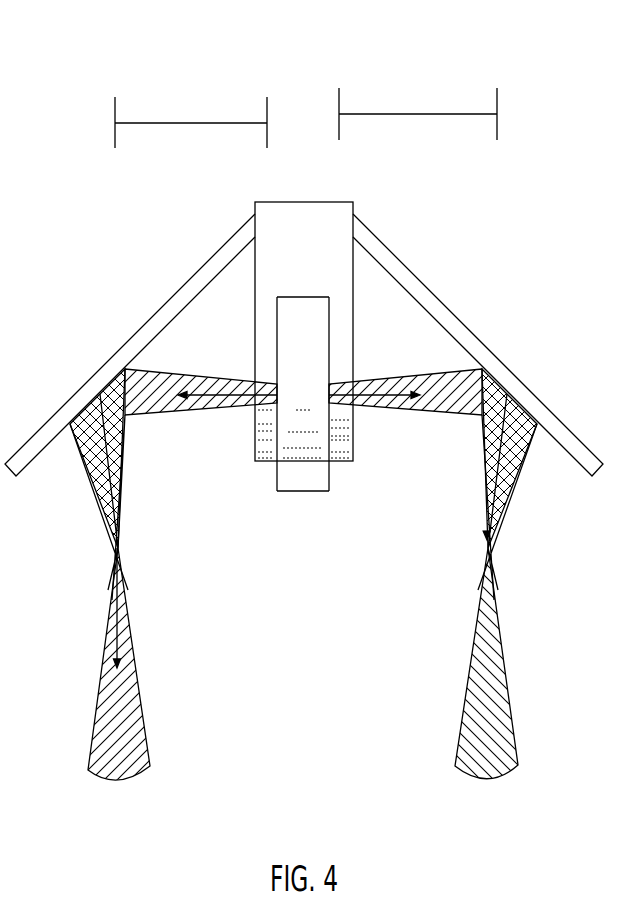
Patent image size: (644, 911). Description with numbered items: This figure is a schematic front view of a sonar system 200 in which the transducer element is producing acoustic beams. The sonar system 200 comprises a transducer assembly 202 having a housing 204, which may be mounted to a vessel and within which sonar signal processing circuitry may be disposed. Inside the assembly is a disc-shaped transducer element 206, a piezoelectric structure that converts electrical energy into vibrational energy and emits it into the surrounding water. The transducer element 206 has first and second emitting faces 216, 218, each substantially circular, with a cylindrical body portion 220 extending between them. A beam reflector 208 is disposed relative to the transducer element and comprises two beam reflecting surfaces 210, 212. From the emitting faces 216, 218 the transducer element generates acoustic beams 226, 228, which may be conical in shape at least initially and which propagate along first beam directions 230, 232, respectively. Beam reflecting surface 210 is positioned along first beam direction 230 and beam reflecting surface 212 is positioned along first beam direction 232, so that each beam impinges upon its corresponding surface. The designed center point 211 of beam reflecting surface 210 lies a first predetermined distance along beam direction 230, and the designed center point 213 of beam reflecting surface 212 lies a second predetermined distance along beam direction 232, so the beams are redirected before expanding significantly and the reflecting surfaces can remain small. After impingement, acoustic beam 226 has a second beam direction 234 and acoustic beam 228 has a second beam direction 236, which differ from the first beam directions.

The sonar system 200 is at (524, 56).
The transducer assembly 202 is at (424, 192).
The housing 204 is at (302, 202).
The transducer element 206 is at (283, 512).
The beam reflector 208 is at (48, 349).
The beam reflecting surface 210 is at (47, 453).
The designed center point 211 is at (120, 365).
The beam reflecting surface 212 is at (567, 458).
The designed center point 213 is at (487, 365).
The first emitting face 216 is at (277, 470).
The second emitting face 218 is at (328, 475).
The cylindrical body portion 220 is at (303, 492).
The acoustic beam 226 is at (208, 352).
The acoustic beam 228 is at (399, 353).
The first beam direction 230 is at (224, 393).
The first beam direction 232 is at (373, 393).
The second beam direction 234 is at (127, 457).
The second beam direction 236 is at (483, 467).